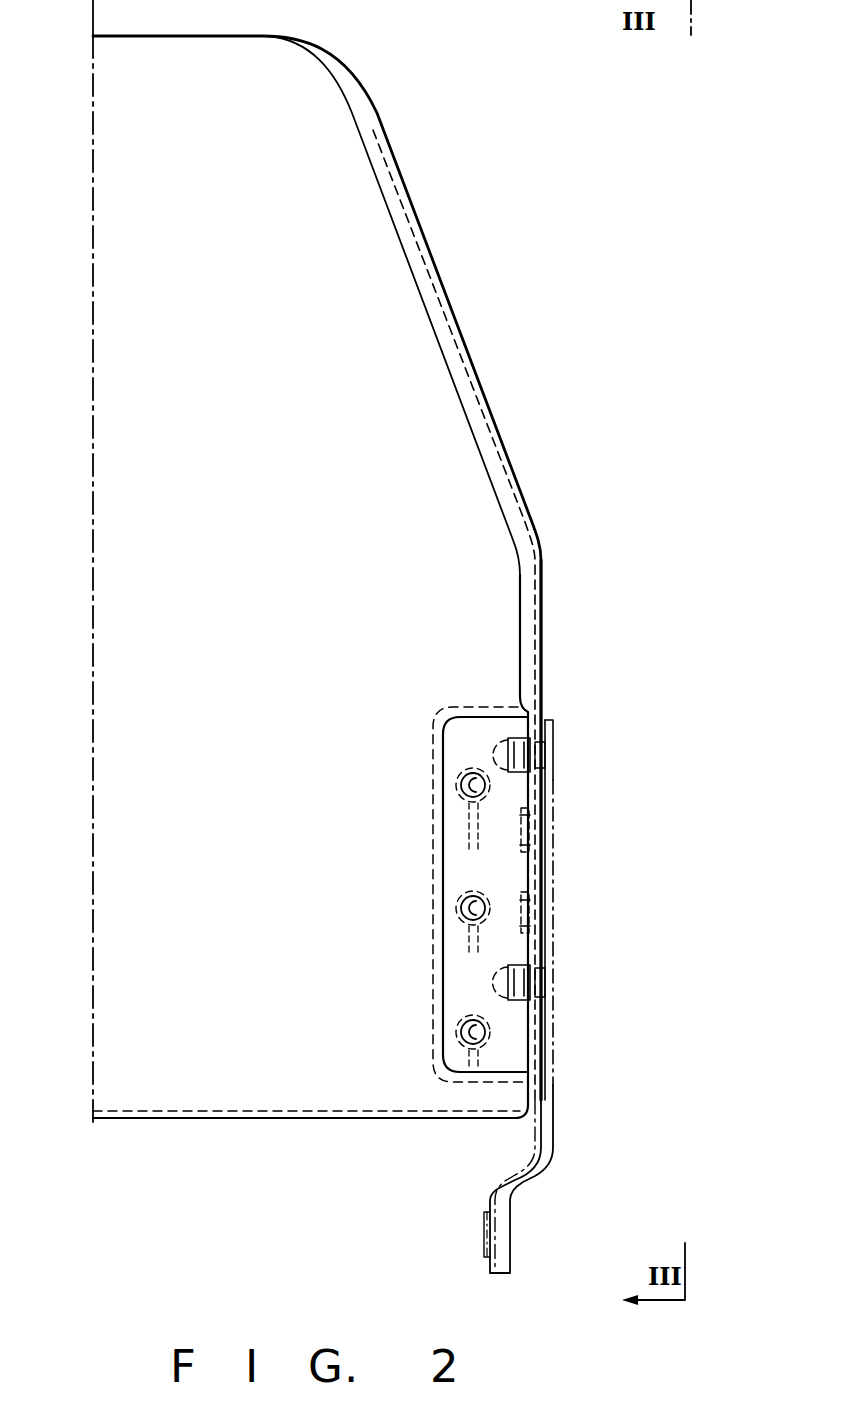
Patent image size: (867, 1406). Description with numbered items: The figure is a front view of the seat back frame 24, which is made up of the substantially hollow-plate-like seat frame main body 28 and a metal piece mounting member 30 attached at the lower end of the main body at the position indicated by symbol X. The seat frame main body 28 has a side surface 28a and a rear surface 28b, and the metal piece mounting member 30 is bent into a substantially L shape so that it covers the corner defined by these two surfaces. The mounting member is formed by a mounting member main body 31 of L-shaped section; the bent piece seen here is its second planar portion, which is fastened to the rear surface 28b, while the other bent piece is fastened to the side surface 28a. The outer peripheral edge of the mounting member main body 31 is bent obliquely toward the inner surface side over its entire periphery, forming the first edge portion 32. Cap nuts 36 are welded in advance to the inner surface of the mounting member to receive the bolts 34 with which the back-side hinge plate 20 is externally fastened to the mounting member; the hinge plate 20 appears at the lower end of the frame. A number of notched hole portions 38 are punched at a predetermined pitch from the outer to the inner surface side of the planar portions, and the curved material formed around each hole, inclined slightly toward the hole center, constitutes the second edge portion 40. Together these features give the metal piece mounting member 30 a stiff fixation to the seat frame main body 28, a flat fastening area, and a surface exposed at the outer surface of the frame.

The back-side hinge plate 20 is at (555, 1148).
The seat back frame 24 is at (458, 237).
The seat frame main body 28 is at (460, 481).
The side surface 28a is at (545, 686).
The rear surface 28b is at (475, 672).
The metal piece mounting member 30 is at (516, 877).
The mounting member main body 31 is at (503, 801).
The first edge portion 32 is at (440, 855).
The bolt 34 is at (548, 758).
The cap nut 36 is at (485, 748).
The notched hole portion 38 is at (460, 782).
The second edge portion 40 is at (468, 773).
The position of attachment of mounting member X is at (437, 1095).